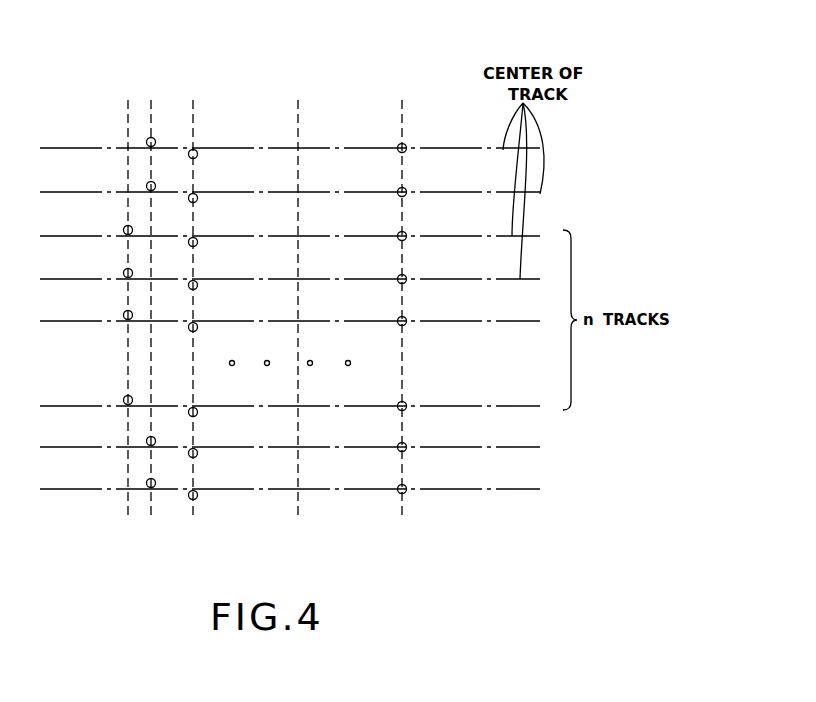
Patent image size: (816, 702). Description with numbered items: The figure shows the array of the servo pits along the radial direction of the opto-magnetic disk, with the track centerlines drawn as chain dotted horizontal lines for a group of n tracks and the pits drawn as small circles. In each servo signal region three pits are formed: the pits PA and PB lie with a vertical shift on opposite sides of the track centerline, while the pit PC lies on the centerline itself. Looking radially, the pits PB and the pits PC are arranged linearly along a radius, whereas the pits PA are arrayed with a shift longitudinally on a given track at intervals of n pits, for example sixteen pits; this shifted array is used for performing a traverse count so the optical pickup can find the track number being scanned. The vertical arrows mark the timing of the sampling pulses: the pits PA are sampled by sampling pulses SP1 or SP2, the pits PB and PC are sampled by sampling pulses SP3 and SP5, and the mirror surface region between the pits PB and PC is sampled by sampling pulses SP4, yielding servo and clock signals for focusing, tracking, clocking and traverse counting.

The sampling pulse SP1 is at (128, 90).
The sampling pulse SP2 is at (151, 90).
The sampling pulse SP3 is at (193, 90).
The sampling pulse SP4 is at (298, 90).
The sampling pulse SP5 is at (402, 90).
The pit PA is at (146, 188).
The pit PB is at (197, 284).
The pit PC is at (406, 277).